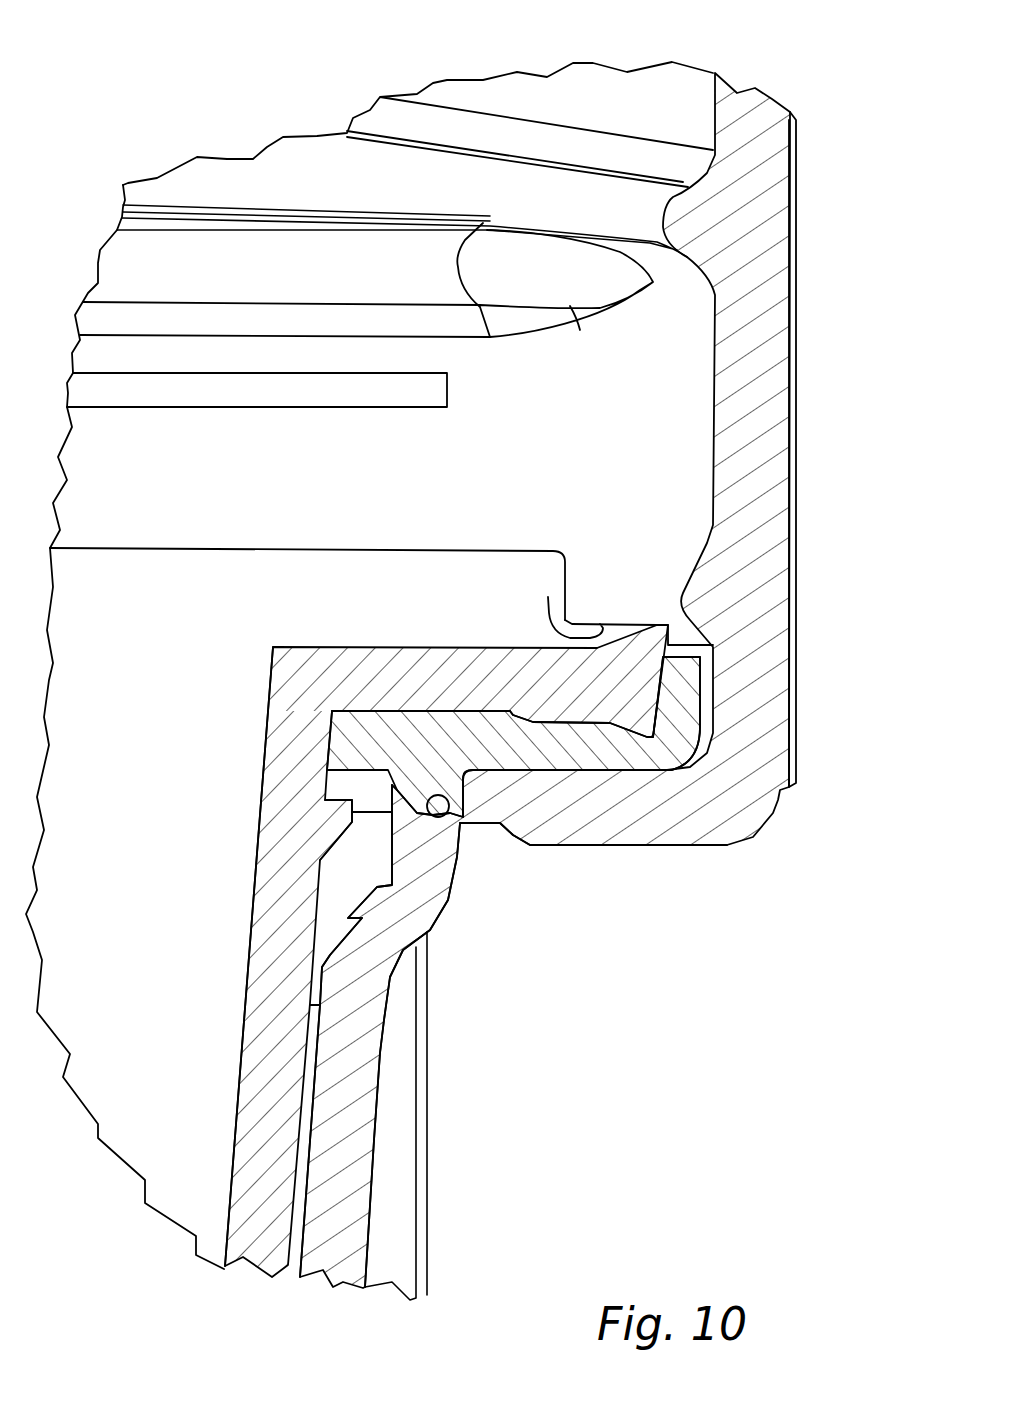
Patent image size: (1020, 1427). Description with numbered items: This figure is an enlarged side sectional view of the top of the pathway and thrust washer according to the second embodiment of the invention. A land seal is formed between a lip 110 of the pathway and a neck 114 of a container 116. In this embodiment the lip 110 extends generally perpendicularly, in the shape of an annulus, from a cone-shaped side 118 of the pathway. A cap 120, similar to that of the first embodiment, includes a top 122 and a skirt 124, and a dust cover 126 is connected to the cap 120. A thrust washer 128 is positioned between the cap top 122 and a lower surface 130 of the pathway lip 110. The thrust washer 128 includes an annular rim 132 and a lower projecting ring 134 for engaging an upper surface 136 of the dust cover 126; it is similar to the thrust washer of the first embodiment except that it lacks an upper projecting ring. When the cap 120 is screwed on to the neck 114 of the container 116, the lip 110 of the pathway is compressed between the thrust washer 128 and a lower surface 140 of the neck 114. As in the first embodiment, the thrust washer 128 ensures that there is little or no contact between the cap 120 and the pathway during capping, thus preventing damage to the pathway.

The lip 110 is at (557, 680).
The neck 114 is at (578, 92).
The container 116 is at (347, 77).
The cone-shaped side 118 is at (262, 1078).
The cap 120 is at (773, 835).
The top 122 is at (563, 807).
The skirt 124 is at (765, 382).
The dust cover 126 is at (347, 1153).
The thrust washer 128 is at (362, 740).
The lower surface 130 is at (415, 710).
The annular rim 132 is at (581, 752).
The lower projecting ring 134 is at (408, 787).
The upper surface 136 is at (438, 817).
The lower surface 140 is at (549, 597).